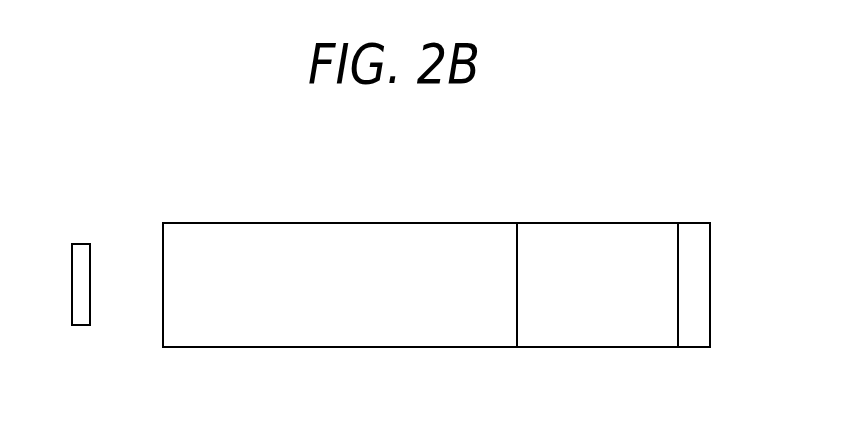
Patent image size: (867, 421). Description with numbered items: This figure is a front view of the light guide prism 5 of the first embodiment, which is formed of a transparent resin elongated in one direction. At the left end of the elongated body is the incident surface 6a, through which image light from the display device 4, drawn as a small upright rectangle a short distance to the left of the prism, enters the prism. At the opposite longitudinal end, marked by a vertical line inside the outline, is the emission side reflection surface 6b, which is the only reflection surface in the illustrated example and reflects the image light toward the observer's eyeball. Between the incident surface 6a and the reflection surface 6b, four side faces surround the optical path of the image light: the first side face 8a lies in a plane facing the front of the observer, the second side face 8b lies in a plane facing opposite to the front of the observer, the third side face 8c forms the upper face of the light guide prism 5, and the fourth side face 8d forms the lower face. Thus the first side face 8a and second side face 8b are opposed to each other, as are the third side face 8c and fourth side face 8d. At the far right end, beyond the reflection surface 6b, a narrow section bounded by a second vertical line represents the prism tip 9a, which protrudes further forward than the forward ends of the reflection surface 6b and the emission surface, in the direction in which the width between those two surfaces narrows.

The display device 4 is at (72, 291).
The light guide prism 5 is at (369, 322).
The incident surface 6a is at (163, 299).
The emission side reflection surface 6b is at (600, 322).
The first side face 8a is at (205, 322).
The second side face 8b is at (453, 320).
The third side face 8c is at (336, 222).
The fourth side face 8d is at (284, 347).
The prism tip 9a is at (695, 323).